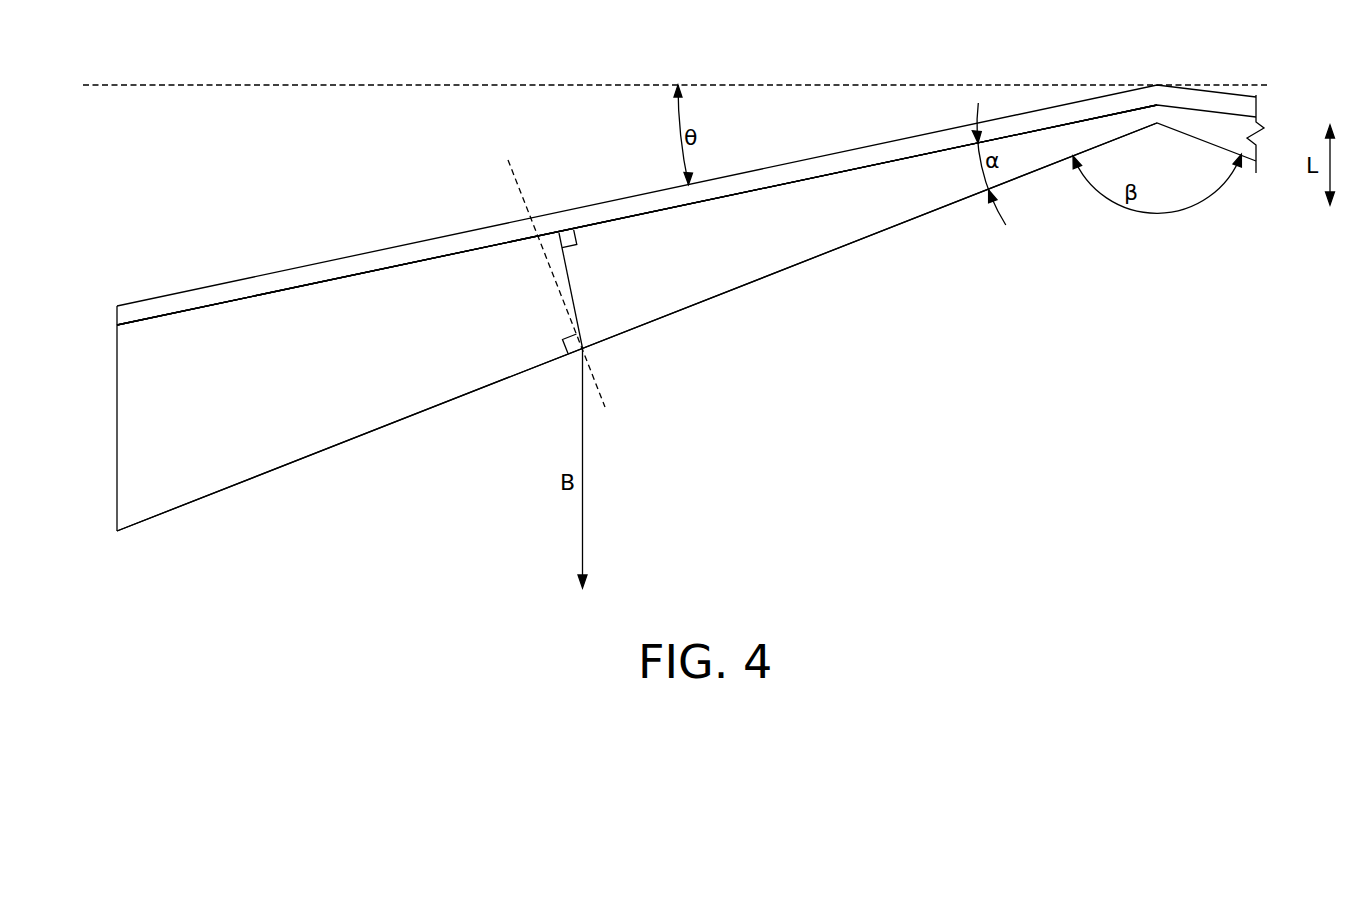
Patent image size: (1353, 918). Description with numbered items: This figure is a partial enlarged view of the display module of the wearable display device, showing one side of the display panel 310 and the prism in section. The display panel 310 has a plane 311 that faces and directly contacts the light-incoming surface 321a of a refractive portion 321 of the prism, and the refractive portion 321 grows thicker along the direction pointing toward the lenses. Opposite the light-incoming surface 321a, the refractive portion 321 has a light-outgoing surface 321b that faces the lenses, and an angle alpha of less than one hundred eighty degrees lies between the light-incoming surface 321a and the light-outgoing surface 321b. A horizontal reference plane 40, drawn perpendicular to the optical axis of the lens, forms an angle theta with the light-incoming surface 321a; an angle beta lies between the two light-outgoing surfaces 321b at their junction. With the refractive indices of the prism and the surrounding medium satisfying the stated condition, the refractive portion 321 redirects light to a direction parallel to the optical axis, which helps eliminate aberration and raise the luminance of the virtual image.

The horizontal reference plane 40 is at (827, 84).
The display panel 310 is at (128, 315).
The plane 311 is at (178, 316).
The refractive portion 321 is at (152, 415).
The light-incoming surface 321a is at (233, 300).
The light-outgoing surface 321b is at (262, 478).